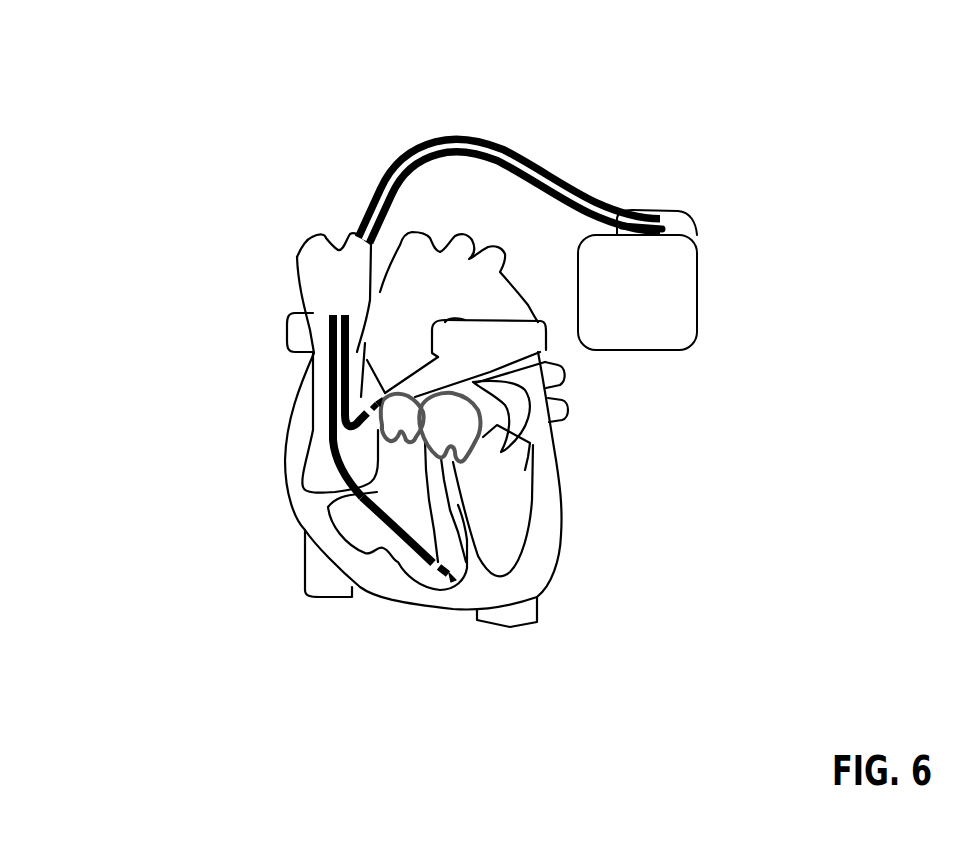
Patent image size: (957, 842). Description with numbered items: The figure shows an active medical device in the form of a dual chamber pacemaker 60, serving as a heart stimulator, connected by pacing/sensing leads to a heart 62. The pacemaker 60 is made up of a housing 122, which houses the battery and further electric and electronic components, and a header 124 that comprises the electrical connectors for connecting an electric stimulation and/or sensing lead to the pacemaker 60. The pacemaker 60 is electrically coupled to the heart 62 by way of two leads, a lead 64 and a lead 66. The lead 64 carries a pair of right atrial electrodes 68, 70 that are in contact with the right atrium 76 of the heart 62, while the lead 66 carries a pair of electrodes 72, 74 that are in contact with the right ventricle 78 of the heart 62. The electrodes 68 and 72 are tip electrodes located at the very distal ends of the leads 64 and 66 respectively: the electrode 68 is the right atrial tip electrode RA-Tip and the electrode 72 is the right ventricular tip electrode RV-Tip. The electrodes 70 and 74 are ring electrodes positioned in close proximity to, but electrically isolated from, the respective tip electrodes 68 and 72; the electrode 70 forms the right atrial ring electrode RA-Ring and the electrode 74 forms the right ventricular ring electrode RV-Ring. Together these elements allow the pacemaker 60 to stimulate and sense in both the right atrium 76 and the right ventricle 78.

The dual chamber pacemaker 60 is at (715, 275).
The heart 62 is at (237, 522).
The lead 64 is at (535, 198).
The lead 66 is at (513, 152).
The right atrial tip electrode 68 is at (249, 370).
The right atrial ring electrode 70 is at (380, 400).
The right ventricular tip electrode 72 is at (452, 584).
The right ventricular ring electrode 74 is at (441, 572).
The right atrium 76 is at (293, 586).
The right ventricle 78 is at (652, 205).
The housing 122 is at (670, 322).
The header 124 is at (687, 220).